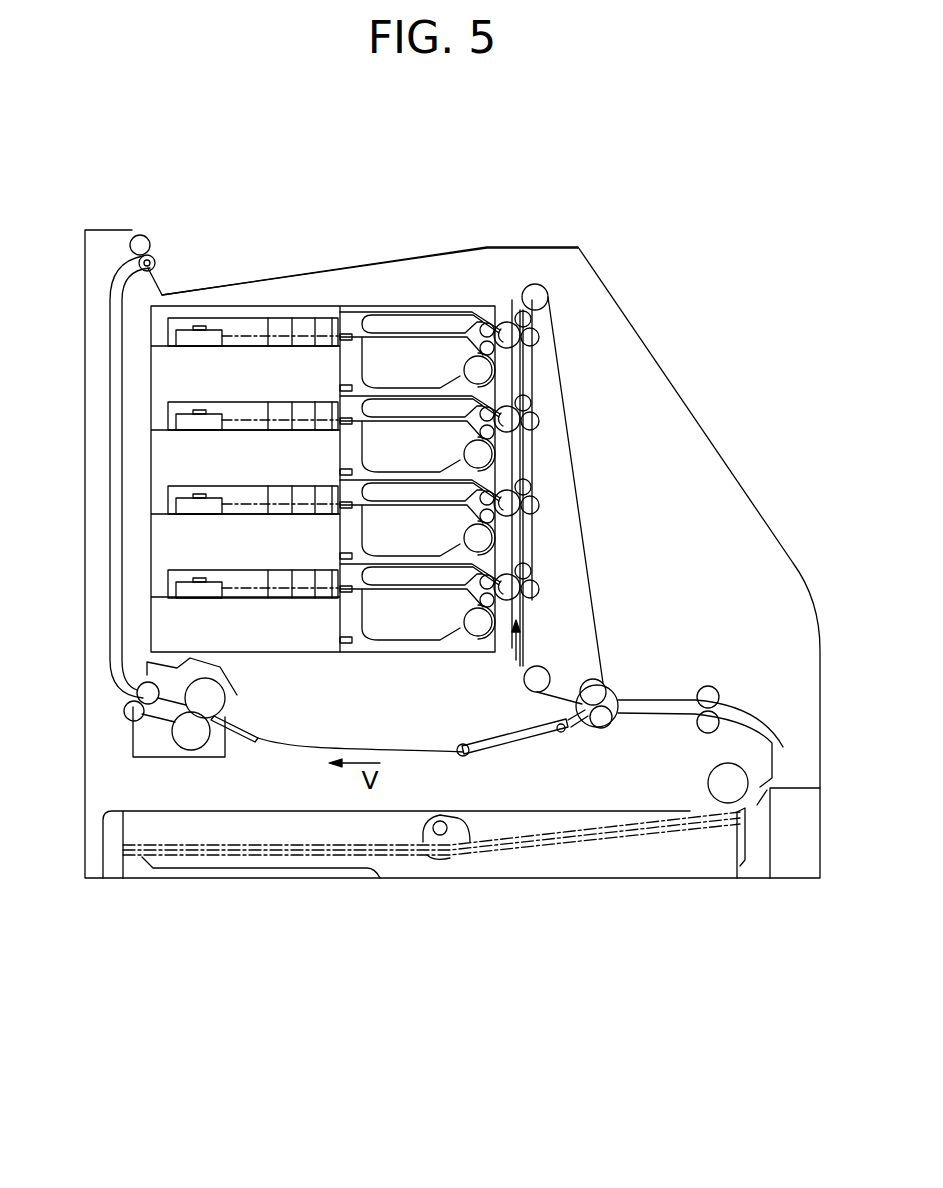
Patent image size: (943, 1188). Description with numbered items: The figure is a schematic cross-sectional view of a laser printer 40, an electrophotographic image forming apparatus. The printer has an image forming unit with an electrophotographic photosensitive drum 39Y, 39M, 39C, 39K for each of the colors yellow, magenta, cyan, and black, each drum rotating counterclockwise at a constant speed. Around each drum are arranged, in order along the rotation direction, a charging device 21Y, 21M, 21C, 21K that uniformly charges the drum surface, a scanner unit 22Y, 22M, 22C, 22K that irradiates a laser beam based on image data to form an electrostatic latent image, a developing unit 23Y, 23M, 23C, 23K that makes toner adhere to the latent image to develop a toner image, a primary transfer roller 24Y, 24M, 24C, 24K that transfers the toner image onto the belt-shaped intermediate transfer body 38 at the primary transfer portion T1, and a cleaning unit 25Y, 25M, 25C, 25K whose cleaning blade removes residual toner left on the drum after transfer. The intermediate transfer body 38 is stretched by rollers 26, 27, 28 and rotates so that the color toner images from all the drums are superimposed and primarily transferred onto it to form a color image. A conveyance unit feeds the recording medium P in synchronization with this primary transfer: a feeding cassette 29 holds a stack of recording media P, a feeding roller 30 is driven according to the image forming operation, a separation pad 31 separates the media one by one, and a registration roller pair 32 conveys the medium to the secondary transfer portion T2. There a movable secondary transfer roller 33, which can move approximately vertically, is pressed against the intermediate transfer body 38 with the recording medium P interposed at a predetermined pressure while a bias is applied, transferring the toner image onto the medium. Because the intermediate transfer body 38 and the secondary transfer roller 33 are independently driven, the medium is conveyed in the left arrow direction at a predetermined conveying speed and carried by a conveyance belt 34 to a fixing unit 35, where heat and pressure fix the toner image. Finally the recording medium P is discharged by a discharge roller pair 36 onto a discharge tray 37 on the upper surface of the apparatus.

The charging device 21K is at (488, 326).
The charging device 21C is at (520, 406).
The charging device 21M is at (520, 490).
The charging device 21Y is at (520, 574).
The scanner unit 22K is at (166, 342).
The scanner unit 22C is at (166, 426).
The scanner unit 22M is at (166, 510).
The scanner unit 22Y is at (166, 594).
The developing unit 23K is at (362, 350).
The developing unit 23C is at (362, 434).
The developing unit 23M is at (362, 518).
The developing unit 23Y is at (362, 602).
The primary transfer roller 24K is at (539, 339).
The primary transfer roller 24C is at (539, 423).
The primary transfer roller 24M is at (539, 507).
The primary transfer roller 24Y is at (539, 591).
The cleaning unit 25K is at (392, 313).
The cleaning unit 25C is at (362, 398).
The cleaning unit 25M is at (362, 482).
The cleaning unit 25Y is at (362, 566).
The roller 26 is at (540, 290).
The roller 27 is at (583, 685).
The roller 28 is at (524, 684).
The feeding cassette 29 is at (602, 880).
The feeding roller 30 is at (708, 778).
The separation pad 31 is at (767, 808).
The registration roller pair 32 is at (718, 688).
The secondary transfer roller 33 is at (605, 731).
The conveyance belt 34 is at (480, 744).
The fixing unit 35 is at (178, 758).
The discharge roller pair 36 is at (163, 252).
The discharge tray 37 is at (339, 268).
The intermediate transfer body 38 is at (522, 630).
The photosensitive drum 39K is at (531, 320).
The photosensitive drum 39C is at (531, 404).
The photosensitive drum 39M is at (531, 488).
The photosensitive drum 39Y is at (531, 574).
The laser printer 40 is at (449, 937).
The recording medium P is at (400, 858).
The primary transfer portion T1 is at (508, 318).
The secondary transfer portion T2 is at (619, 690).